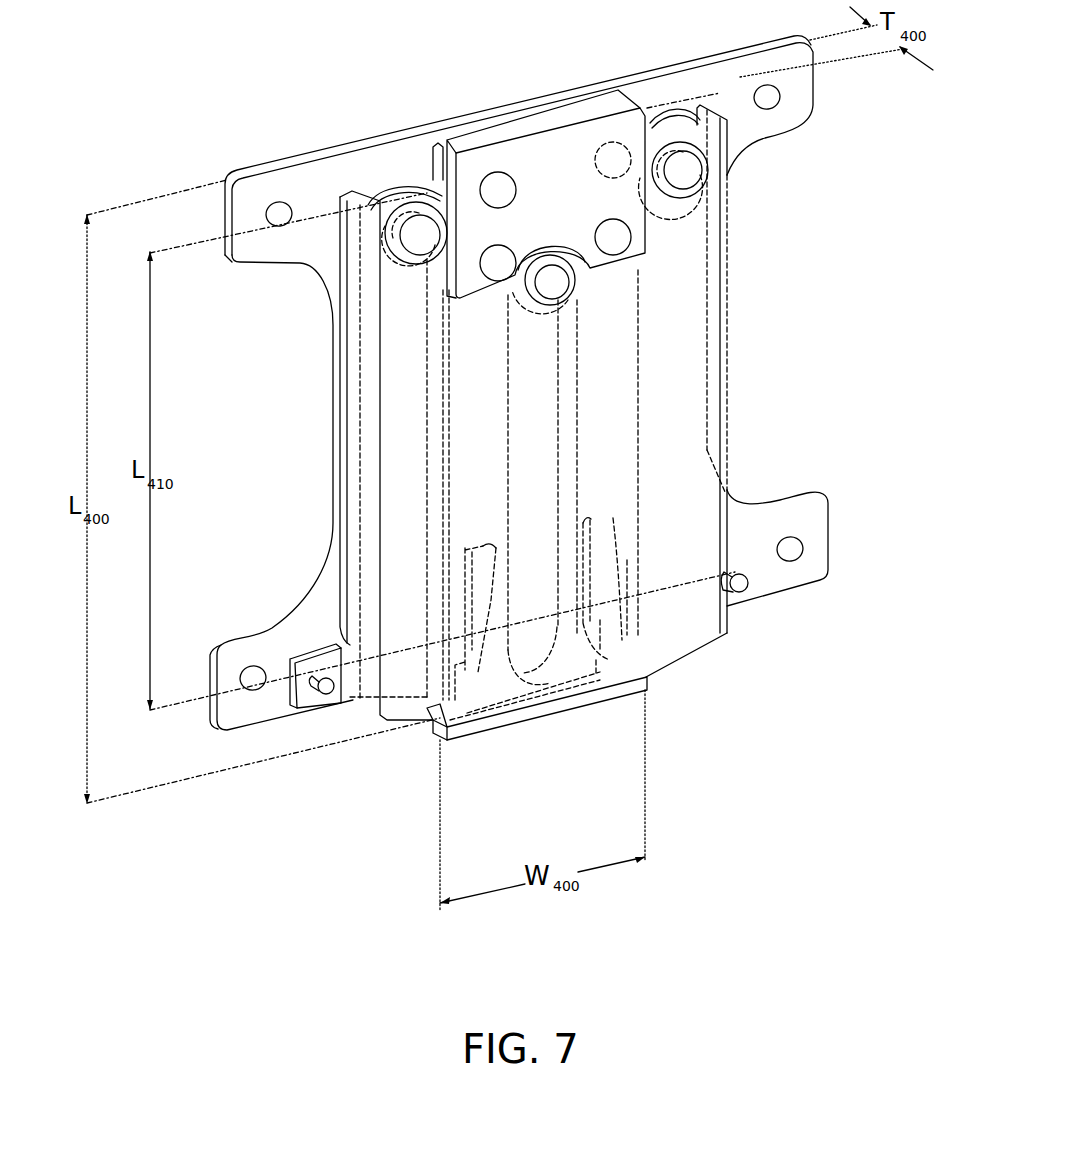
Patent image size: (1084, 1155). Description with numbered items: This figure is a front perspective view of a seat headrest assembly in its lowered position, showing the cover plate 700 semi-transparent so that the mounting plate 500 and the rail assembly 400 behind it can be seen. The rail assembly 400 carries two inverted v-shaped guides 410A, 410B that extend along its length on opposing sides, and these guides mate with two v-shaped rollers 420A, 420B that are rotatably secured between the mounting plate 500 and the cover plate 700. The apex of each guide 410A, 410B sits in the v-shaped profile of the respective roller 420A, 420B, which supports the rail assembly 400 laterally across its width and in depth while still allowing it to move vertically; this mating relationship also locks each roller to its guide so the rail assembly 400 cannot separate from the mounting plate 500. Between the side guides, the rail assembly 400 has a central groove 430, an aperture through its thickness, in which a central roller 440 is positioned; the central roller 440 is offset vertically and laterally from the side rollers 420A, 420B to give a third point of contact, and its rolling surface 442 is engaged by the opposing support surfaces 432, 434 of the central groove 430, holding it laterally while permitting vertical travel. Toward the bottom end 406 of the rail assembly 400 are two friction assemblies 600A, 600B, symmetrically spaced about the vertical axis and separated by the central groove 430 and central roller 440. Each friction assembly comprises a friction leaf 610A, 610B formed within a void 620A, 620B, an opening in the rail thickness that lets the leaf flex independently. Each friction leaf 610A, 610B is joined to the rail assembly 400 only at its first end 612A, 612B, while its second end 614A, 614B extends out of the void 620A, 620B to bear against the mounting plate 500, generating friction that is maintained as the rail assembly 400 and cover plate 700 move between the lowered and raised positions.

The mounting plate 500 is at (278, 186).
The rail assembly 400 is at (573, 110).
The guide 410A is at (440, 157).
The guide 410B is at (640, 360).
The roller 420A is at (403, 190).
The roller 420B is at (663, 123).
The central roller 440 is at (573, 283).
The rolling surface 442 is at (542, 322).
The cover plate 700 is at (727, 373).
The support surface 434 is at (558, 531).
The support surface 432 is at (512, 480).
The first end 612A is at (482, 548).
The first end 612B is at (600, 520).
The second end 614A is at (488, 705).
The second end 614B is at (637, 663).
The friction leaf 610A is at (480, 607).
The friction leaf 610B is at (597, 600).
The friction assembly 600A is at (468, 646).
The friction assembly 600B is at (544, 664).
The central groove 430 is at (614, 639).
The bottom end 406 is at (555, 705).
The void 620A is at (491, 699).
The void 620B is at (613, 679).